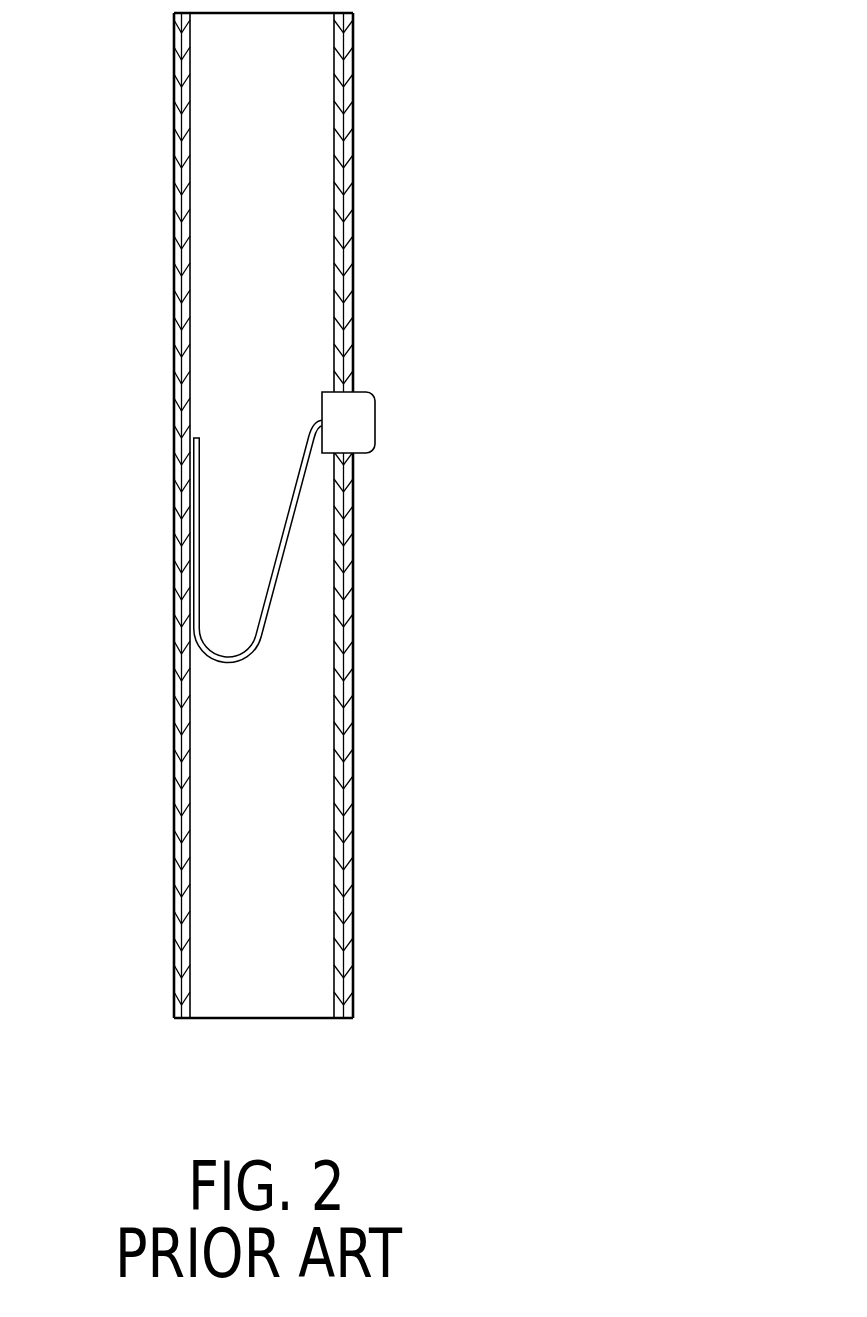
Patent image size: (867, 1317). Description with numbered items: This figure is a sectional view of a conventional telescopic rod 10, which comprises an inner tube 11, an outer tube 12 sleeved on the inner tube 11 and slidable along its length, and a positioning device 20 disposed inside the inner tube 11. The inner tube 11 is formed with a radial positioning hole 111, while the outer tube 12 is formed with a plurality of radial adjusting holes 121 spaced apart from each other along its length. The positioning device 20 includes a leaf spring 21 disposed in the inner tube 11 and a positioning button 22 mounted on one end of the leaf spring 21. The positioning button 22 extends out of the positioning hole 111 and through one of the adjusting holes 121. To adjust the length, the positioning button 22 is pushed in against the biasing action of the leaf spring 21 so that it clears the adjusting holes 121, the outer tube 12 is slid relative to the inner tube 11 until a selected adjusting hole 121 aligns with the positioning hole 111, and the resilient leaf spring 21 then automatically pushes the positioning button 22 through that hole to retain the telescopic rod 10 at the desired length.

The telescopic rod 10 is at (378, 563).
The inner tube 11 is at (340, 148).
The outer tube 12 is at (345, 213).
The radial positioning hole 111 is at (349, 356).
The radial adjusting holes 121 is at (350, 473).
The positioning device 20 is at (286, 517).
The leaf spring 21 is at (268, 570).
The positioning button 22 is at (367, 418).